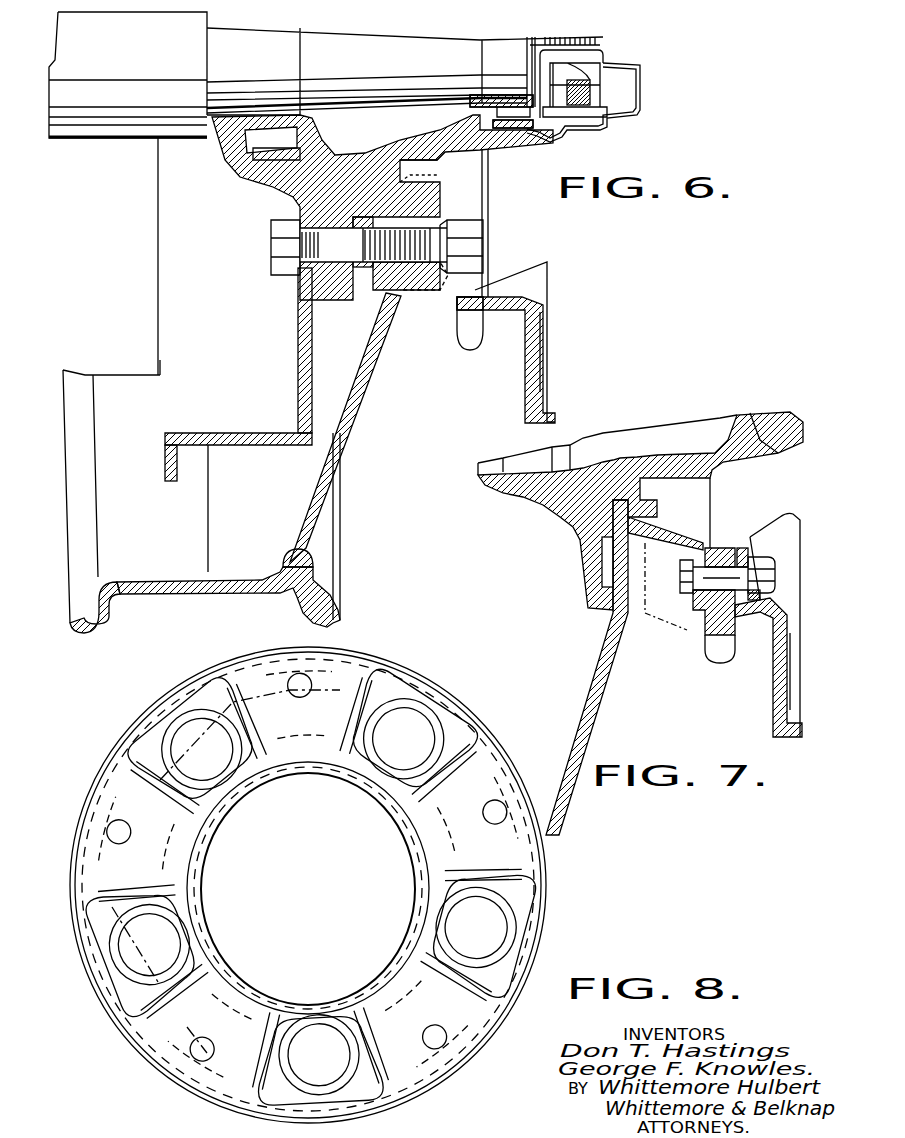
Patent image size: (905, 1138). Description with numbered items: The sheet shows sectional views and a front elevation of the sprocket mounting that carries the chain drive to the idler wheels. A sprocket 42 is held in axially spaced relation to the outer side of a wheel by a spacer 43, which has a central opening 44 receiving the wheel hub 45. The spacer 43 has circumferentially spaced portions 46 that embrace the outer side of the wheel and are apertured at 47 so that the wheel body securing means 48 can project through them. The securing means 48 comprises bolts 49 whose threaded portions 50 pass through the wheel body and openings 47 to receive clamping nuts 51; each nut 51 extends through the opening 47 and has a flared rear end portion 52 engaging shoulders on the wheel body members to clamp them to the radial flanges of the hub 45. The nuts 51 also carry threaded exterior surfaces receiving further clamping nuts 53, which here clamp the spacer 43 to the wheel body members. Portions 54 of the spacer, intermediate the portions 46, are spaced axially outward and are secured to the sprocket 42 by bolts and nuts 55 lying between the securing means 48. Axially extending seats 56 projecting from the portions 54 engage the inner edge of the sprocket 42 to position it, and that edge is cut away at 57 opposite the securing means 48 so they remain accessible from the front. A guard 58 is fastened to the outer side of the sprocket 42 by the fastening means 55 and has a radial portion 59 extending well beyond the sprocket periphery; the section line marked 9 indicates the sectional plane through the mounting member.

In FIG. 7, the sprocket 42 is at (706, 637).
In FIG. 6, the spacer 43 is at (385, 358).
In FIG. 7, the spacer 43 is at (660, 510).
In FIG. 8, the spacer 43 is at (433, 850).
In FIG. 6, the central opening 44 is at (404, 166).
In FIG. 7, the central opening 44 is at (647, 482).
In FIG. 8, the central opening 44 is at (342, 838).
In FIG. 6, the wheel hub 45 is at (527, 140).
In FIG. 7, the wheel hub 45 is at (720, 462).
In FIG. 6, the circumferentially spaced portion 46 is at (400, 186).
In FIG. 8, the circumferentially spaced portion 46 is at (407, 690).
In FIG. 6, the aperture 47 is at (400, 199).
In FIG. 8, the aperture 47 is at (503, 922).
In FIG. 6, the wheel body securing means 48 is at (478, 217).
In FIG. 6, the bolt 49 is at (336, 283).
In FIG. 6, the threaded portion 50 is at (390, 293).
In FIG. 6, the clamping nut 51 is at (447, 283).
In FIG. 6, the flared rear end portion 52 is at (377, 307).
In FIG. 6, the clamping nut 53 is at (480, 277).
In FIG. 7, the spacer portion 54 is at (712, 547).
In FIG. 8, the spacer portion 54 is at (115, 811).
In FIG. 7, the bolts and nuts 55 is at (733, 572).
In FIG. 7, the axially extending seat 56 is at (748, 540).
In FIG. 6, the cut-away portion 57 is at (487, 283).
In FIG. 6, the guard 58 is at (545, 283).
In FIG. 7, the guard 58 is at (773, 607).
In FIG. 6, the radial portion 59 is at (530, 383).
In FIG. 7, the radial portion 59 is at (773, 672).
In FIG. 8, the section line 9 is at (427, 717).